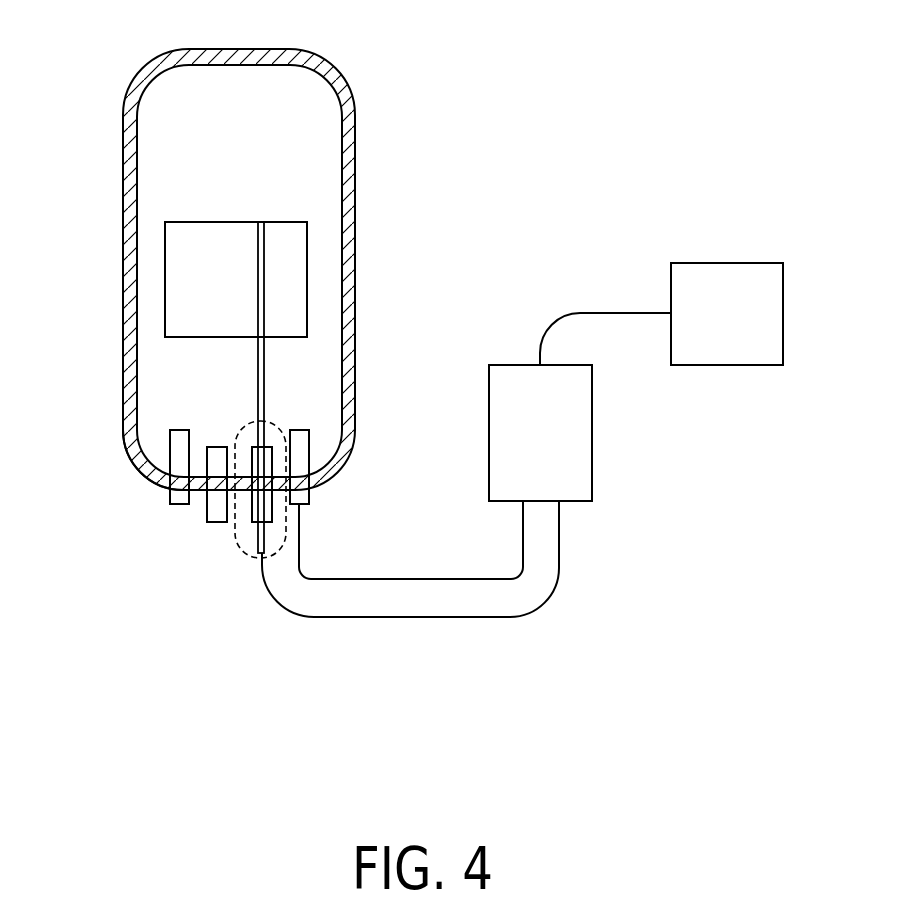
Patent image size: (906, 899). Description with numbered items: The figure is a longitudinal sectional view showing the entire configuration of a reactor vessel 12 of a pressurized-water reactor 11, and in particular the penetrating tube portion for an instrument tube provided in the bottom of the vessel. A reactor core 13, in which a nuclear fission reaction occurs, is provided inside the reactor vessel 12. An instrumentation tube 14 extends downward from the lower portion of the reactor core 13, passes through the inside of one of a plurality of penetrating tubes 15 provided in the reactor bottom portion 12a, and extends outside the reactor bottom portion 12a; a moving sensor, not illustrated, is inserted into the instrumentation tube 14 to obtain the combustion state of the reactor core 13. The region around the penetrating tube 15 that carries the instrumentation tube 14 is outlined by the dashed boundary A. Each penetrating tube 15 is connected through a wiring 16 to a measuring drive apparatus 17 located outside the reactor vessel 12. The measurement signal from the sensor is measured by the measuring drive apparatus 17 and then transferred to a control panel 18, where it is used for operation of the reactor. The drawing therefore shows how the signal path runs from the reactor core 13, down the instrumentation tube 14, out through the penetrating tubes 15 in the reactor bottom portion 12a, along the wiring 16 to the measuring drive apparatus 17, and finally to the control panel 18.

The pressurized-water reactor 11 is at (245, 272).
The reactor vessel 12 is at (123, 325).
The reactor bottom portion 12a is at (134, 464).
The reactor core 13 is at (185, 268).
The instrumentation tube 14 is at (265, 357).
The penetrating tubes 15 is at (245, 513).
The wiring 16 is at (363, 580).
The measuring drive apparatus 17 is at (592, 453).
The control panel 18 is at (720, 263).
The region A is at (286, 512).